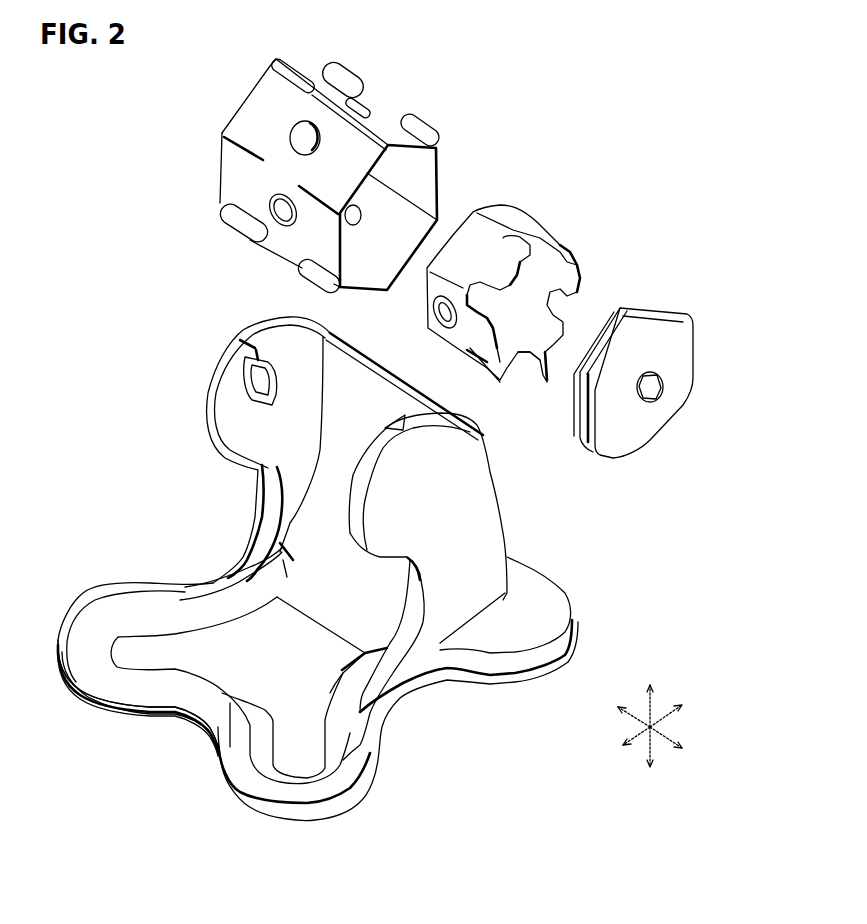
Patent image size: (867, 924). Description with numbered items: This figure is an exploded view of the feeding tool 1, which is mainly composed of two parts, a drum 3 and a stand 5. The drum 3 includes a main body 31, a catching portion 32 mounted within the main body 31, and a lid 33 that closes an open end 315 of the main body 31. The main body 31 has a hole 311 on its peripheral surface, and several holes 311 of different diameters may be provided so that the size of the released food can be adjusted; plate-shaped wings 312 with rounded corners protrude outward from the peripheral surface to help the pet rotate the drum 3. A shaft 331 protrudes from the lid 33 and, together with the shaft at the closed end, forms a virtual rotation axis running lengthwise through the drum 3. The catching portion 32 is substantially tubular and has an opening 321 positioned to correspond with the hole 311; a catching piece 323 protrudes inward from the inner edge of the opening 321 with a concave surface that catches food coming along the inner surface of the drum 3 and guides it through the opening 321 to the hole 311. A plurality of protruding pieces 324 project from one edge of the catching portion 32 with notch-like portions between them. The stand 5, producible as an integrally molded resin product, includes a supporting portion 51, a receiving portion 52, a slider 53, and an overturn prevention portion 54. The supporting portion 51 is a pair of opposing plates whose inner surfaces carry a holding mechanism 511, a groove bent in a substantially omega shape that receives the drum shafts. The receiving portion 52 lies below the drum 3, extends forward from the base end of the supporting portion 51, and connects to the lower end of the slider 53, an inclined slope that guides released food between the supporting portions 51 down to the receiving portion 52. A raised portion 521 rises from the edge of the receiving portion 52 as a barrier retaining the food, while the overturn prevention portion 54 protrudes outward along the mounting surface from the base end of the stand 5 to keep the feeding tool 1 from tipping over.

The feeding tool 1 is at (118, 292).
The drum 3 is at (617, 137).
The main body 31 is at (440, 170).
The hole 311 is at (290, 137).
The wing 312 is at (224, 212).
The open end 315 is at (382, 280).
The catching portion 32 is at (517, 218).
The opening 321 is at (443, 330).
The catching piece 323 is at (495, 372).
The protruding piece 324 is at (538, 362).
The lid 33 is at (617, 307).
The shaft 331 is at (648, 405).
The stand 5 is at (220, 577).
The supporting portion 51 is at (213, 400).
The holding mechanism 511 is at (267, 400).
The receiving portion 52 is at (296, 682).
The raised portion 521 is at (160, 692).
The slider 53 is at (344, 585).
The overturn prevention portion 54 is at (84, 673).